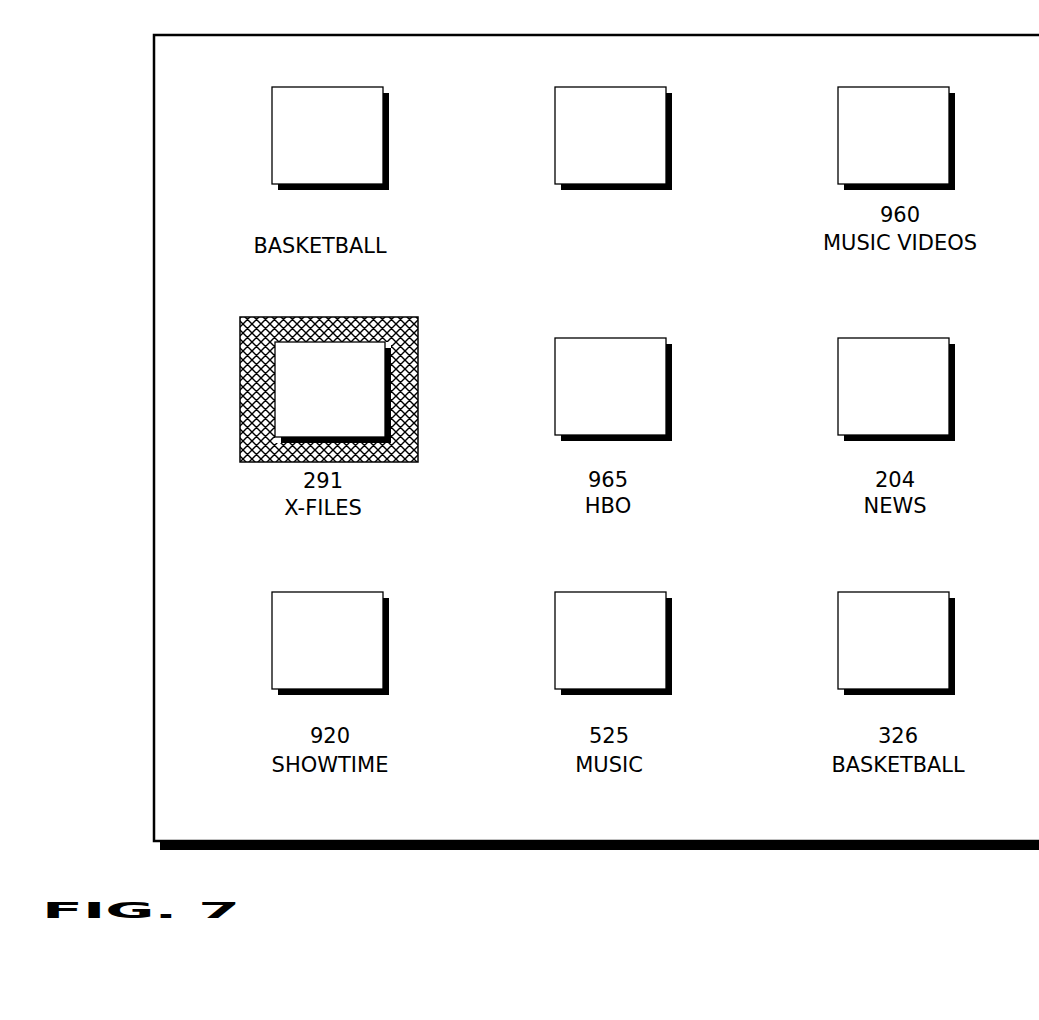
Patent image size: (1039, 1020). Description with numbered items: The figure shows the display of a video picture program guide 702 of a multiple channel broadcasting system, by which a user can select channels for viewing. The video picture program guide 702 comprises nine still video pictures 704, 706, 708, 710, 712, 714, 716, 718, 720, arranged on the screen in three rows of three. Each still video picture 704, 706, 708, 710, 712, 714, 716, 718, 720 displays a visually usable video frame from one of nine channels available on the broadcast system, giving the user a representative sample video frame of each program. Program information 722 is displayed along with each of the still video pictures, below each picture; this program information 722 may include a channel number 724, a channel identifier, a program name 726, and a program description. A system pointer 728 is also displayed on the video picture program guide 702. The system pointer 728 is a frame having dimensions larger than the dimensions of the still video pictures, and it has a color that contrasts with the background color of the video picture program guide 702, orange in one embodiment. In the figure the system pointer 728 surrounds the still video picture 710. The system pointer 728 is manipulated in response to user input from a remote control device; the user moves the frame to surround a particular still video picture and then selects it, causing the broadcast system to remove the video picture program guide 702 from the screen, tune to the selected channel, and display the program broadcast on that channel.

The video picture program guide 702 is at (940, 823).
The still video picture 704 is at (329, 98).
The still video picture 706 is at (628, 98).
The still video picture 708 is at (920, 97).
The still video picture 710 is at (347, 362).
The still video picture 712 is at (642, 353).
The still video picture 714 is at (920, 348).
The still video picture 716 is at (360, 603).
The still video picture 718 is at (643, 603).
The still video picture 720 is at (922, 603).
The program information 722 is at (272, 212).
The channel number 724 is at (585, 212).
The program name 726 is at (560, 242).
The system pointer 728 is at (412, 372).